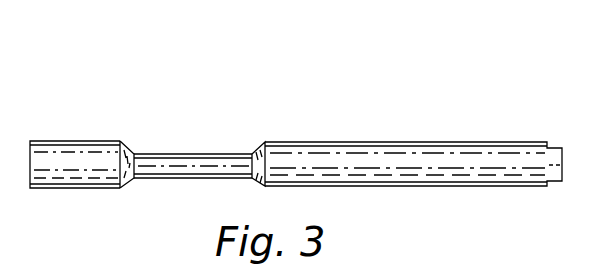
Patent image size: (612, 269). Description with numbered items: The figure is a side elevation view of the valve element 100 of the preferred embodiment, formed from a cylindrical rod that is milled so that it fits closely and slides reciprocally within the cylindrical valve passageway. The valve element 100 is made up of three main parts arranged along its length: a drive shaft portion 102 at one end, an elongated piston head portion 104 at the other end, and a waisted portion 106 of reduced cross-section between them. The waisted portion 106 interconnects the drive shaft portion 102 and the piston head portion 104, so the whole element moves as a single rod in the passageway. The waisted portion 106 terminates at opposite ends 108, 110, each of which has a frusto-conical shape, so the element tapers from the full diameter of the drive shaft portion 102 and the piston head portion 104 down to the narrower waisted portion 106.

The valve element 100 is at (369, 83).
The drive shaft portion 102 is at (421, 158).
The elongated piston head portion 104 is at (62, 155).
The waisted portion 106 is at (184, 163).
The end of waisted portion 108 is at (126, 143).
The end of waisted portion 110 is at (261, 150).